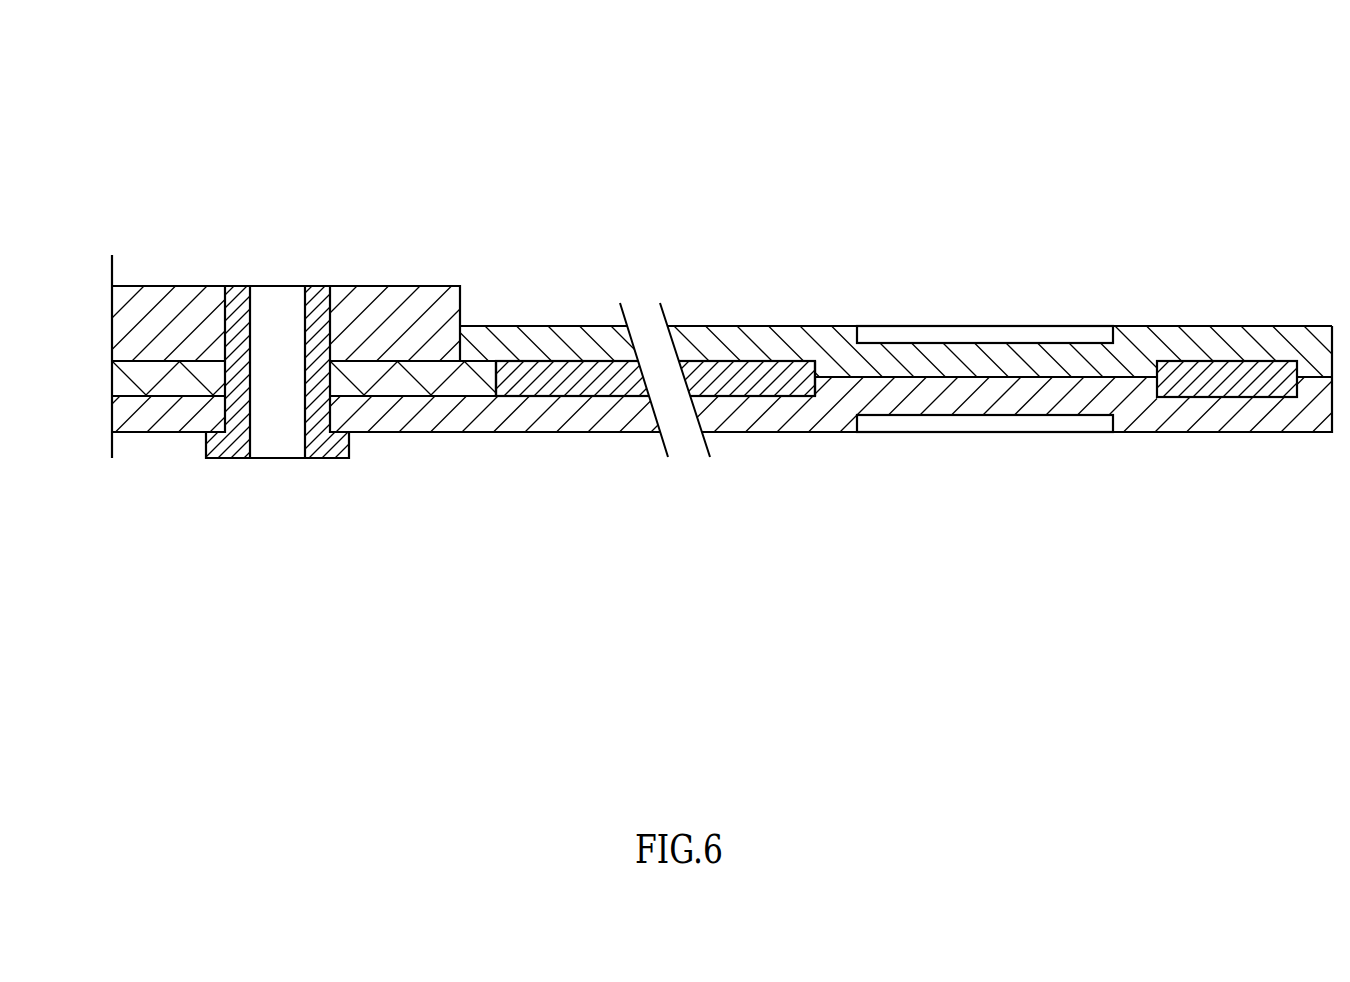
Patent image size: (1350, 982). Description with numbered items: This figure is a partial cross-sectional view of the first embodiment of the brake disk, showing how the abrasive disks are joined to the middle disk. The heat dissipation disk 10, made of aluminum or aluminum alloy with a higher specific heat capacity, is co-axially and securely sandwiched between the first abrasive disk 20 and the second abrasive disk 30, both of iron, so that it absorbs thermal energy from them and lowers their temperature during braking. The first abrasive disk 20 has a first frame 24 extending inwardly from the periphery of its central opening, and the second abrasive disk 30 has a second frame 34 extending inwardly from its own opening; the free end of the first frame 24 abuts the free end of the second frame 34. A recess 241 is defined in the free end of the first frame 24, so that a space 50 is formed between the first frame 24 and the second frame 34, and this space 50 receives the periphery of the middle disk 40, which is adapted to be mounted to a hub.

The heat dissipation disk 10 is at (772, 382).
The first abrasive disk 20 is at (944, 270).
The first frame 24 is at (702, 337).
The recess 241 is at (497, 385).
The second abrasive disk 30 is at (990, 442).
The second frame 34 is at (582, 422).
The middle disk 40 is at (362, 307).
The space 50 is at (577, 365).